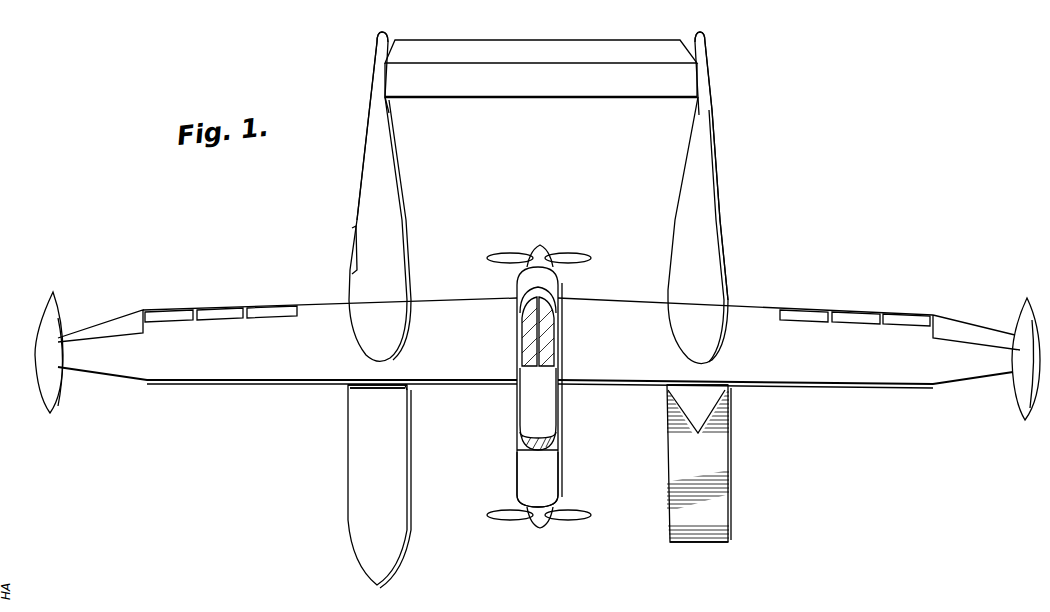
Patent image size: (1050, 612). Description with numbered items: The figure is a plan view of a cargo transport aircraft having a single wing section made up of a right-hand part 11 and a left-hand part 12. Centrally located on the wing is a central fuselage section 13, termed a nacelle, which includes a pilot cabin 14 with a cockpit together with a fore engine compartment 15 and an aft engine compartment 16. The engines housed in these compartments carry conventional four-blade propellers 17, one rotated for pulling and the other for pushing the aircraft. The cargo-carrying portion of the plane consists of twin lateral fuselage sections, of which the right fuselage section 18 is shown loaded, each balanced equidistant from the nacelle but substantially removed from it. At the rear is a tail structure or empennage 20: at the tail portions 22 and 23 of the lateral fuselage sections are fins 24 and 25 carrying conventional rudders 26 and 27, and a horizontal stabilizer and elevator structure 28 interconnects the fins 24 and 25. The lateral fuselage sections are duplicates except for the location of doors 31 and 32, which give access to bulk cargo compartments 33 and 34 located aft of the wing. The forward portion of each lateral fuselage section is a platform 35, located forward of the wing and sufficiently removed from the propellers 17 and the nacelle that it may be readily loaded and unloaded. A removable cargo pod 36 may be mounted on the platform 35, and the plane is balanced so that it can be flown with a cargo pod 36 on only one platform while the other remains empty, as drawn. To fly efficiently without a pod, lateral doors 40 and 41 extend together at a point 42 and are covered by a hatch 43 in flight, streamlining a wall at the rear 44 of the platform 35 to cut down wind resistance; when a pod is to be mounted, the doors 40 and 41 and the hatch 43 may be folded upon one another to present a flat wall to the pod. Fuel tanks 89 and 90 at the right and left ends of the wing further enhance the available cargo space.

The right-hand wing part 11 is at (836, 386).
The left-hand wing part 12 is at (150, 372).
The central fuselage section 13 is at (566, 441).
The pilot cabin 14 is at (526, 417).
The fore engine compartment 15 is at (520, 488).
The aft engine compartment 16 is at (555, 283).
The four-blade propeller 17 is at (566, 256).
The right fuselage section 18 is at (731, 479).
The tail structure 20 is at (494, 101).
The tail portion of right lateral fuselage section 22 is at (715, 119).
The tail portion of left lateral fuselage section 23 is at (370, 113).
The fin 24 is at (700, 113).
The fin 25 is at (389, 105).
The rudder 26 is at (712, 58).
The rudder 27 is at (380, 54).
The horizontal stabilizer and elevator structure 28 is at (569, 99).
The door 31 is at (727, 250).
The door 32 is at (352, 250).
The bulk cargo compartment 33 is at (714, 209).
The bulk cargo compartment 34 is at (365, 201).
The platform 35 is at (720, 520).
The removable cargo pod 36 is at (350, 527).
The lateral door 40 is at (355, 390).
The lateral door 41 is at (397, 382).
The meeting point of lateral doors 42 is at (698, 434).
The hatch 43 is at (360, 376).
The rear of platform 44 is at (667, 392).
The fuel tank 89 is at (1024, 418).
The fuel tank 90 is at (51, 412).